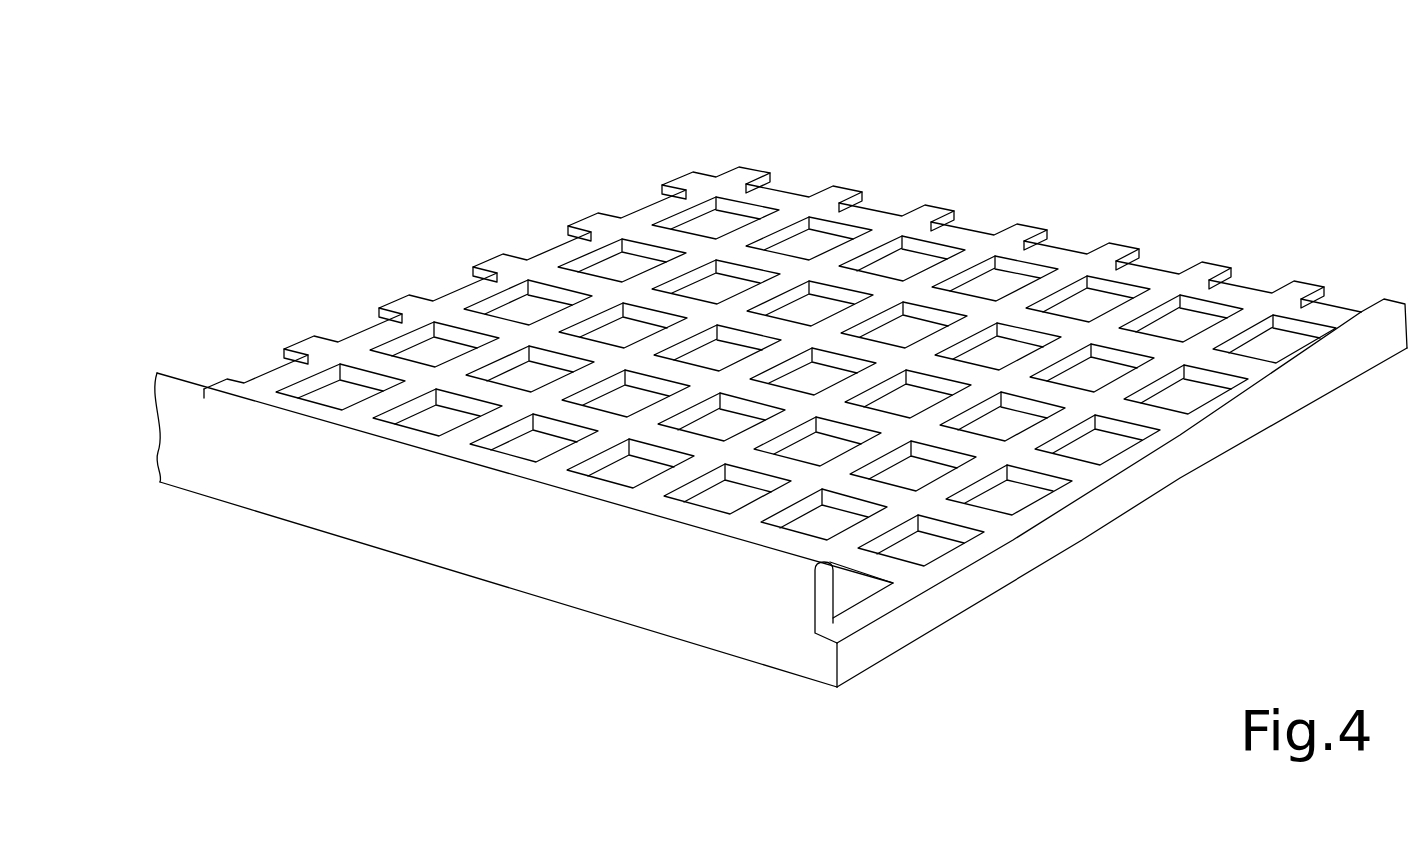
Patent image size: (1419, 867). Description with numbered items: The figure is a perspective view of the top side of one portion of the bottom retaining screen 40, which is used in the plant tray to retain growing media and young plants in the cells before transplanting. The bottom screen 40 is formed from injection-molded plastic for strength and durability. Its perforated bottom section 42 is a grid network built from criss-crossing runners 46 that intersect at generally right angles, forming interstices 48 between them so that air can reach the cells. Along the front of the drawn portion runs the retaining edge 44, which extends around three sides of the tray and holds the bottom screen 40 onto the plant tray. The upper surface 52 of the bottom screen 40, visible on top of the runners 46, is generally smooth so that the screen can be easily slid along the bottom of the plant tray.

The bottom retaining screen 40 is at (380, 142).
The perforated bottom section 42 is at (1064, 246).
The retaining edge 44 is at (561, 576).
The runners 46 is at (655, 216).
The interstices 48 is at (905, 255).
The upper surface 52 is at (976, 252).